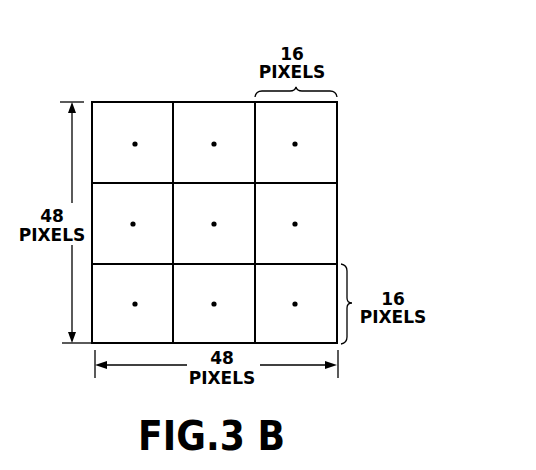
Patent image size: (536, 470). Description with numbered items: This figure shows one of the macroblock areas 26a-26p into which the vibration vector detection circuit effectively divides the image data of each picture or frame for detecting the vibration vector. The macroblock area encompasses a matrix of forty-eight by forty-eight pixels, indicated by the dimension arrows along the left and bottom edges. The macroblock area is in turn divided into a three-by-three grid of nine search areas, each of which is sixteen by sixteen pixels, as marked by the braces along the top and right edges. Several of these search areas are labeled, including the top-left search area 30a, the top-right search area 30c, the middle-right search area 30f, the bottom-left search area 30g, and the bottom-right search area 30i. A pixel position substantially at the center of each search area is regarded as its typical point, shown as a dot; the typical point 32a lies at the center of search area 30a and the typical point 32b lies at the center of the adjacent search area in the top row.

The macroblock areas 26a-26p is at (397, 172).
The search area 30a is at (100, 113).
The search area 30c is at (323, 127).
The search area 30f is at (315, 236).
The search area 30g is at (103, 332).
The search area 30i is at (322, 330).
The typical point 32a is at (135, 141).
The typical point 32b is at (214, 141).